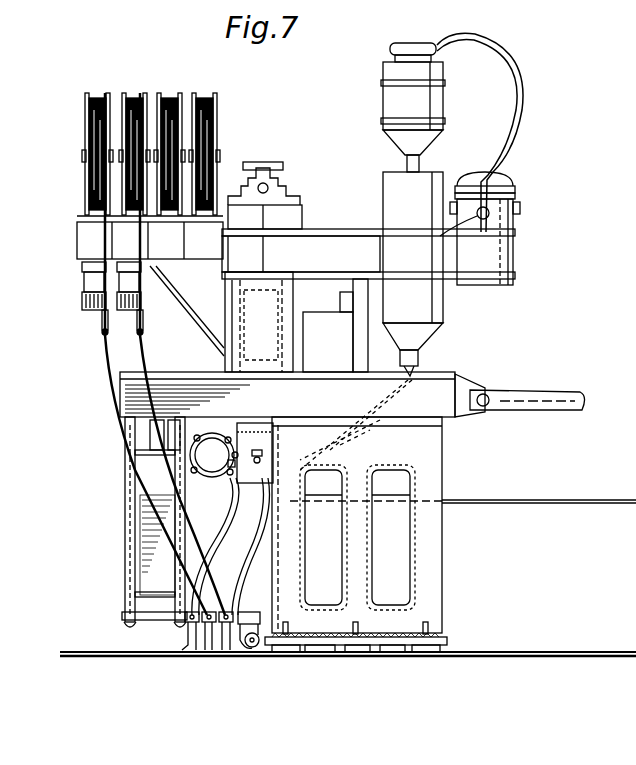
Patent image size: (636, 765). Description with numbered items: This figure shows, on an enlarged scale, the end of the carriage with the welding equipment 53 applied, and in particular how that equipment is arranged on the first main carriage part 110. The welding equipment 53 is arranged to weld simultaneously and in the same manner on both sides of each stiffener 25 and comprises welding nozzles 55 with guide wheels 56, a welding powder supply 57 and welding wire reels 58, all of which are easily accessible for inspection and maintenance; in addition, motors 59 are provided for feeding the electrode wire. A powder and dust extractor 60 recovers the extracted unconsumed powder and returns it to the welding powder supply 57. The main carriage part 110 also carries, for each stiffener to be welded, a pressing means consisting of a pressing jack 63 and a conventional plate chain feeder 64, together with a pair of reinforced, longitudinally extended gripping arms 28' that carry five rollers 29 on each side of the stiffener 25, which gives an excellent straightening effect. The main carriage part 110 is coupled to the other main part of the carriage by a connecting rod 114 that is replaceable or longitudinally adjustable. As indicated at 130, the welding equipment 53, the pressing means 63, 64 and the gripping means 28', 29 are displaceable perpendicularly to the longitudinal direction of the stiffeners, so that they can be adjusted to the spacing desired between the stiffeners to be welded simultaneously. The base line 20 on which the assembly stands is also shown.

The floor/base line 20 is at (490, 657).
The stiffener 25 is at (614, 514).
The reinforced gripping arms 28' is at (392, 506).
The rollers 29 is at (425, 652).
The welding equipment 53 is at (102, 576).
The welding nozzles 55 is at (215, 652).
The guide wheels 56 is at (253, 652).
The welding powder supply 57 is at (445, 304).
The welding wire reels 58 is at (85, 118).
The motors for electrode feeding 59 is at (83, 283).
The powder and dust extractor 60 is at (515, 262).
The pressing jack 63 is at (250, 360).
The plate chain feeder 64 is at (200, 462).
The first main carriage part 110 is at (122, 402).
The connecting rod 114 is at (548, 412).
The transverse displaceability indication 130 is at (334, 290).